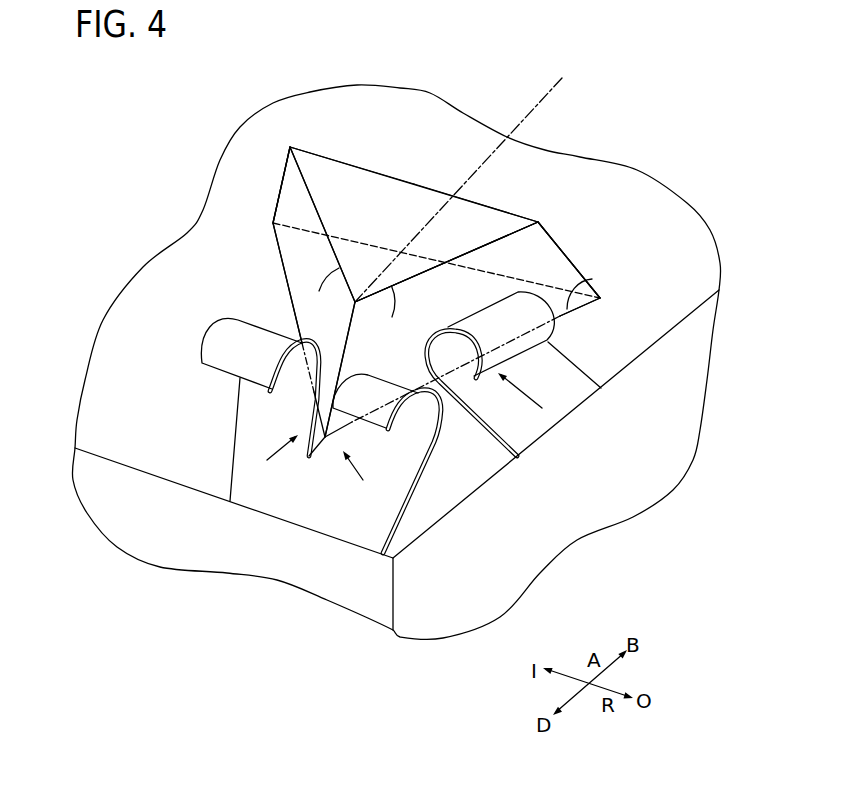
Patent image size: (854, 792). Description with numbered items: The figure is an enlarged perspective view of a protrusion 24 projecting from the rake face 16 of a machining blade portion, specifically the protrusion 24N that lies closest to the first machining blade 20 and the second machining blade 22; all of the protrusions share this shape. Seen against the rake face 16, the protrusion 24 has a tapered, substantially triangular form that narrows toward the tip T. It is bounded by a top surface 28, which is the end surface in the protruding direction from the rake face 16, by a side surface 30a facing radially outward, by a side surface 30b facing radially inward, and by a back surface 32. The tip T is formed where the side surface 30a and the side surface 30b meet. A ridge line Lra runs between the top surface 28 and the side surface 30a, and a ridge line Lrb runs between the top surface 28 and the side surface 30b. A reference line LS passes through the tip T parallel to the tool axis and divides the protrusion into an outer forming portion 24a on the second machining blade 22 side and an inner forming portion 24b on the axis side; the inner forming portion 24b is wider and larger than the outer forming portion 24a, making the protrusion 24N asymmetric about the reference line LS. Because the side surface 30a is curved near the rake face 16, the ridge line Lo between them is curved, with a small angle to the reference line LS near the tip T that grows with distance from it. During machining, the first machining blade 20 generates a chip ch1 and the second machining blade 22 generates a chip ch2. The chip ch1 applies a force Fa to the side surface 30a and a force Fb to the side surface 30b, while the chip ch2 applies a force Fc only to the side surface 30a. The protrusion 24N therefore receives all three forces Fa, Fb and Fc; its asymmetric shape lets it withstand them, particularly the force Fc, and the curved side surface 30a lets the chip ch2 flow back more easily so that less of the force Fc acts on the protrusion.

The rake face 16 is at (215, 228).
The first machining blade 20 is at (170, 482).
The second machining blade 22 is at (472, 490).
The protrusion 24 is at (414, 126).
The protrusion closest to the first and second machining blades 24N is at (436, 248).
The outer forming portion 24a is at (484, 191).
The inner forming portion 24b is at (381, 158).
The top surface 28 is at (337, 182).
The side surface (radially outward) 30a is at (507, 250).
The side surface (radially inward) 30b is at (305, 262).
The back surface 32 is at (415, 213).
The reference line LS is at (485, 178).
The ridge line between side surface 30a and rake face Lo is at (594, 280).
The ridge line between top surface and side surface 30b Lrb is at (318, 297).
The ridge line between top surface and side surface 30a Lra is at (392, 316).
The tip T is at (344, 352).
The chip ch1 is at (236, 427).
The chip ch2 is at (558, 351).
The force Fa is at (363, 480).
The force Fb is at (269, 459).
The force Fc is at (524, 390).